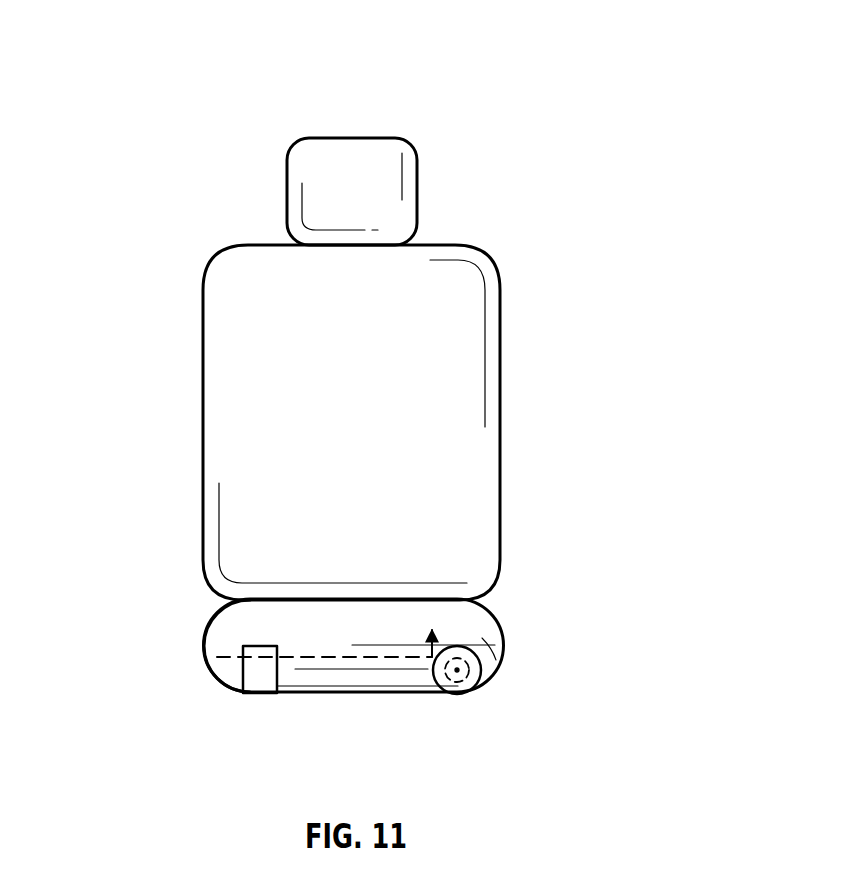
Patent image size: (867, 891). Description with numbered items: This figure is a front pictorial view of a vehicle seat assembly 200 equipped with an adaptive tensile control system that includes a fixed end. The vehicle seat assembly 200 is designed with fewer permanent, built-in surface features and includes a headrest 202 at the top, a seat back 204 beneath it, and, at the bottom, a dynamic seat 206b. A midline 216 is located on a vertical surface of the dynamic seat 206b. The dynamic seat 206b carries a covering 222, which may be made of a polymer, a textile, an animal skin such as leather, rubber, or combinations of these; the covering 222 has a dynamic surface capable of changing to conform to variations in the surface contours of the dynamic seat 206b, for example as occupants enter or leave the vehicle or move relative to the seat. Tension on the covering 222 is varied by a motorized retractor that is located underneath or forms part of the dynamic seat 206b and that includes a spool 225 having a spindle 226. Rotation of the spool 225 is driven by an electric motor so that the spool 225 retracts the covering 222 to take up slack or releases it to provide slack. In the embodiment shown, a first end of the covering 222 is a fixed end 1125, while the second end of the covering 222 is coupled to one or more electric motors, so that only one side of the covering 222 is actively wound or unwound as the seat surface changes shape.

The vehicle seat assembly 200 is at (463, 58).
The headrest 202 is at (410, 184).
The seat back 204 is at (480, 344).
The dynamic seat 206b is at (371, 685).
The covering 222 is at (213, 618).
The midline 216 is at (320, 657).
The spool 225 is at (458, 690).
The spindle 226 is at (463, 680).
The fixed end 1125 is at (260, 694).